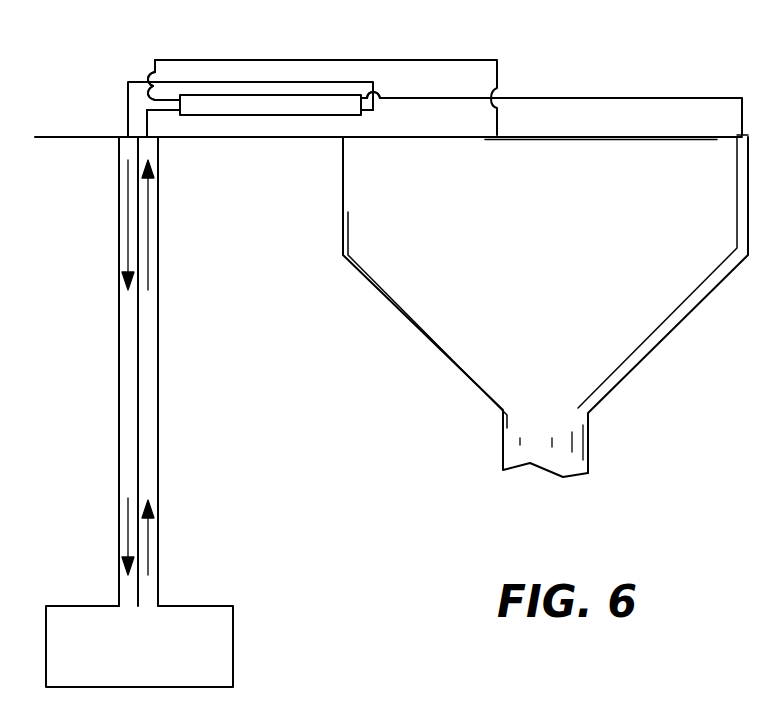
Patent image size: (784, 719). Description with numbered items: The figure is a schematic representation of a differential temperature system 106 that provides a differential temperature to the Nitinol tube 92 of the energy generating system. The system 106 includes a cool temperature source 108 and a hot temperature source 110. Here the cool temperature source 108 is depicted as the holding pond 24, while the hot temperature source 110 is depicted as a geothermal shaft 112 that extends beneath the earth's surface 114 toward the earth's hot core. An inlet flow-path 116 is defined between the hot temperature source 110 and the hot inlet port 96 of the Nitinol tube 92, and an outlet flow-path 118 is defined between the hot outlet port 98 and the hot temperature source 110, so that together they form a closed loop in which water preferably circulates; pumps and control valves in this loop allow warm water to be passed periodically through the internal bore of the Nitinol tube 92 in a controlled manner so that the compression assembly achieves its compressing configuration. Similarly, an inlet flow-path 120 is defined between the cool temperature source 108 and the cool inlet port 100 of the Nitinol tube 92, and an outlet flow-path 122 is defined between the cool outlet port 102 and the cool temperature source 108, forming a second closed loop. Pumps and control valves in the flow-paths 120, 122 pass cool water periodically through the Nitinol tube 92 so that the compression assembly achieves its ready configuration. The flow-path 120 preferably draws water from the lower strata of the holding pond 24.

The holding pond 24 is at (529, 305).
The Nitinol tube 92 is at (272, 94).
The hot inlet port 96 is at (175, 110).
The hot outlet port 98 is at (365, 110).
The cool inlet port 100 is at (366, 92).
The cool outlet port 102 is at (175, 98).
The differential temperature system 106 is at (558, 49).
The cool temperature source 108 is at (562, 247).
The hot temperature source 110 is at (161, 682).
The geothermal shaft 112 is at (175, 570).
The earth's surface 114 is at (70, 137).
The inlet flow-path 116 is at (160, 110).
The outlet flow-path 118 is at (315, 82).
The inlet flow-path 120 is at (585, 98).
The outlet flow-path 122 is at (153, 60).